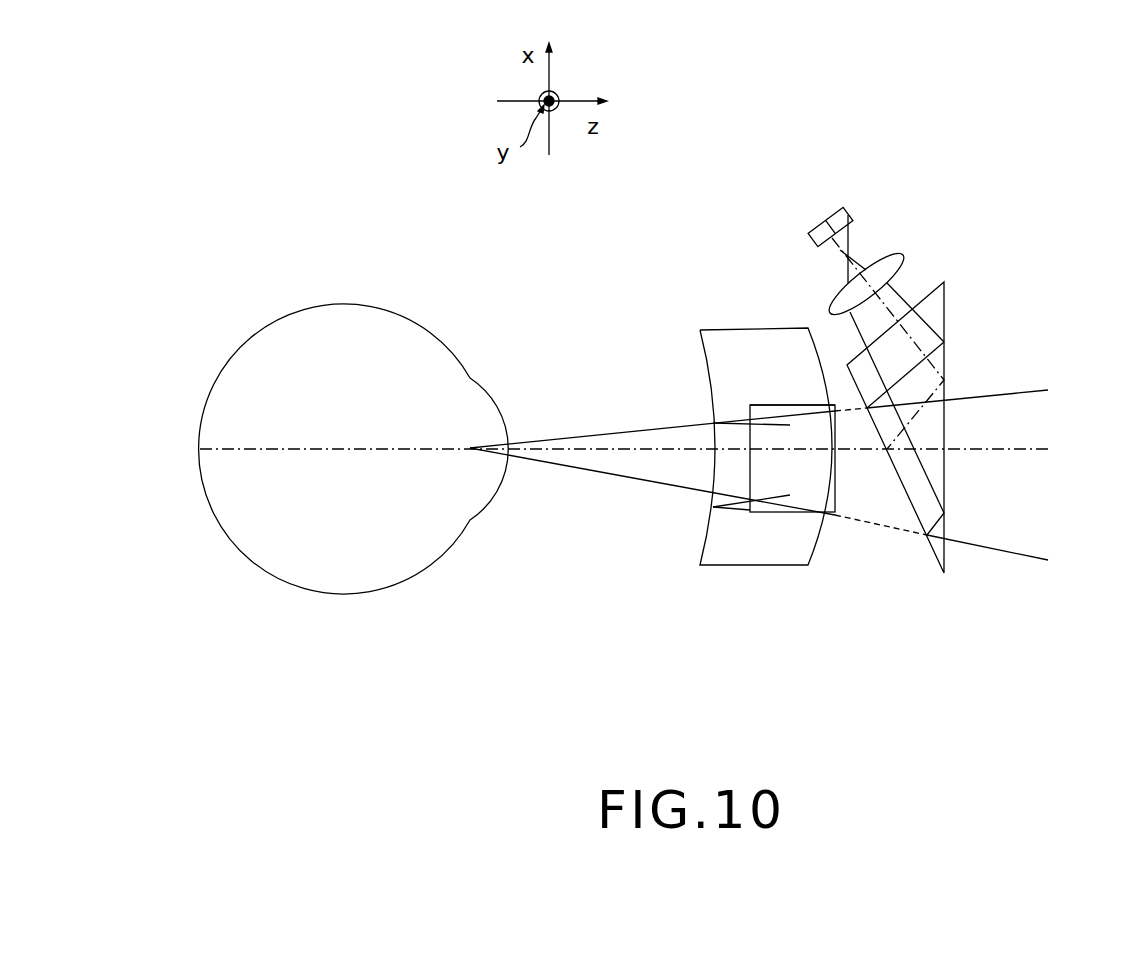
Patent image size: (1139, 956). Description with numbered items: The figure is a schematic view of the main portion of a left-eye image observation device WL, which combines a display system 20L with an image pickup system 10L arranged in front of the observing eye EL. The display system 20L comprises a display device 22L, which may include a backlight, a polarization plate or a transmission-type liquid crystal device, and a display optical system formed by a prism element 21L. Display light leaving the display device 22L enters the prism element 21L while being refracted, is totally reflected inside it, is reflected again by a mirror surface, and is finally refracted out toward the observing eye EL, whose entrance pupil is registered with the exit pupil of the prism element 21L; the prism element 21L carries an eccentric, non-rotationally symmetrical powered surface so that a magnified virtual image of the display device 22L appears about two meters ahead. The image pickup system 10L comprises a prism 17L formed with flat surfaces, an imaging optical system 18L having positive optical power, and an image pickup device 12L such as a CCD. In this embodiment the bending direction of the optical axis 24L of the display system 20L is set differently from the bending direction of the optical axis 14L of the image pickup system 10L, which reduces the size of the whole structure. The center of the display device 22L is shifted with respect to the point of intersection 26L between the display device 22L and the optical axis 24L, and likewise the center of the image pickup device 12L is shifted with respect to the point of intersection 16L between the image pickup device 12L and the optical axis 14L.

The image pickup system 10L is at (982, 133).
The image pickup device 12L is at (843, 210).
The optical axis 14L is at (1010, 450).
The point of intersection 16L is at (825, 222).
The prism 17L is at (942, 302).
The imaging optical system 18L is at (900, 257).
The display system 20L is at (491, 640).
The prism element 21L is at (712, 548).
The display device 22L is at (800, 498).
The optical axis 24L is at (600, 453).
The point of intersection 26L is at (792, 450).
The observing eye EL is at (365, 377).
The left-eye image observation device WL is at (718, 208).